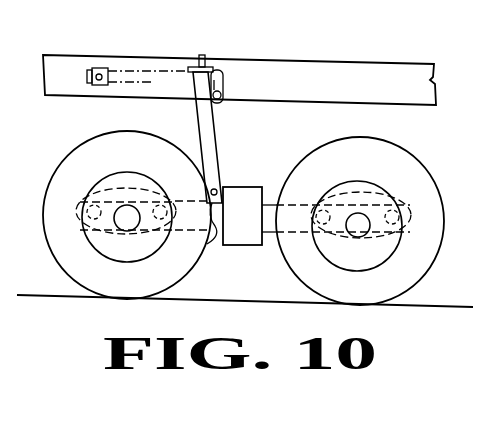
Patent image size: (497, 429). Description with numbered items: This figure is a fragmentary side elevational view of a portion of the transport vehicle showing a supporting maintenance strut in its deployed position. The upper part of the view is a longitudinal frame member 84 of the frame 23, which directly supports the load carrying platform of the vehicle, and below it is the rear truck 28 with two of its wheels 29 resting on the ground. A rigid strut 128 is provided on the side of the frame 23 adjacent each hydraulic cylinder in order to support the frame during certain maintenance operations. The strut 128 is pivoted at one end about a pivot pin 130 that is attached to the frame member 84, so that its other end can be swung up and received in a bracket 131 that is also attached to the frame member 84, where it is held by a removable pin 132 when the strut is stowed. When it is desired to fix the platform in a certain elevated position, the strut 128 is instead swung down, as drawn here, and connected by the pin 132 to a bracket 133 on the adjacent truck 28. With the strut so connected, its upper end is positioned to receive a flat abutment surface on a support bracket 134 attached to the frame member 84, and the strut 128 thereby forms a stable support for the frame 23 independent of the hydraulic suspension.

The frame 23 is at (398, 62).
The rear truck 28 is at (268, 269).
The wheels 29 is at (138, 292).
The longitudinal frame member 84 is at (410, 95).
The rigid strut 128 is at (134, 67).
The pivot pin 130 is at (224, 93).
The bracket 131 is at (101, 67).
The removable pin 132 is at (218, 189).
The bracket 133 is at (249, 226).
The support bracket 134 is at (206, 56).